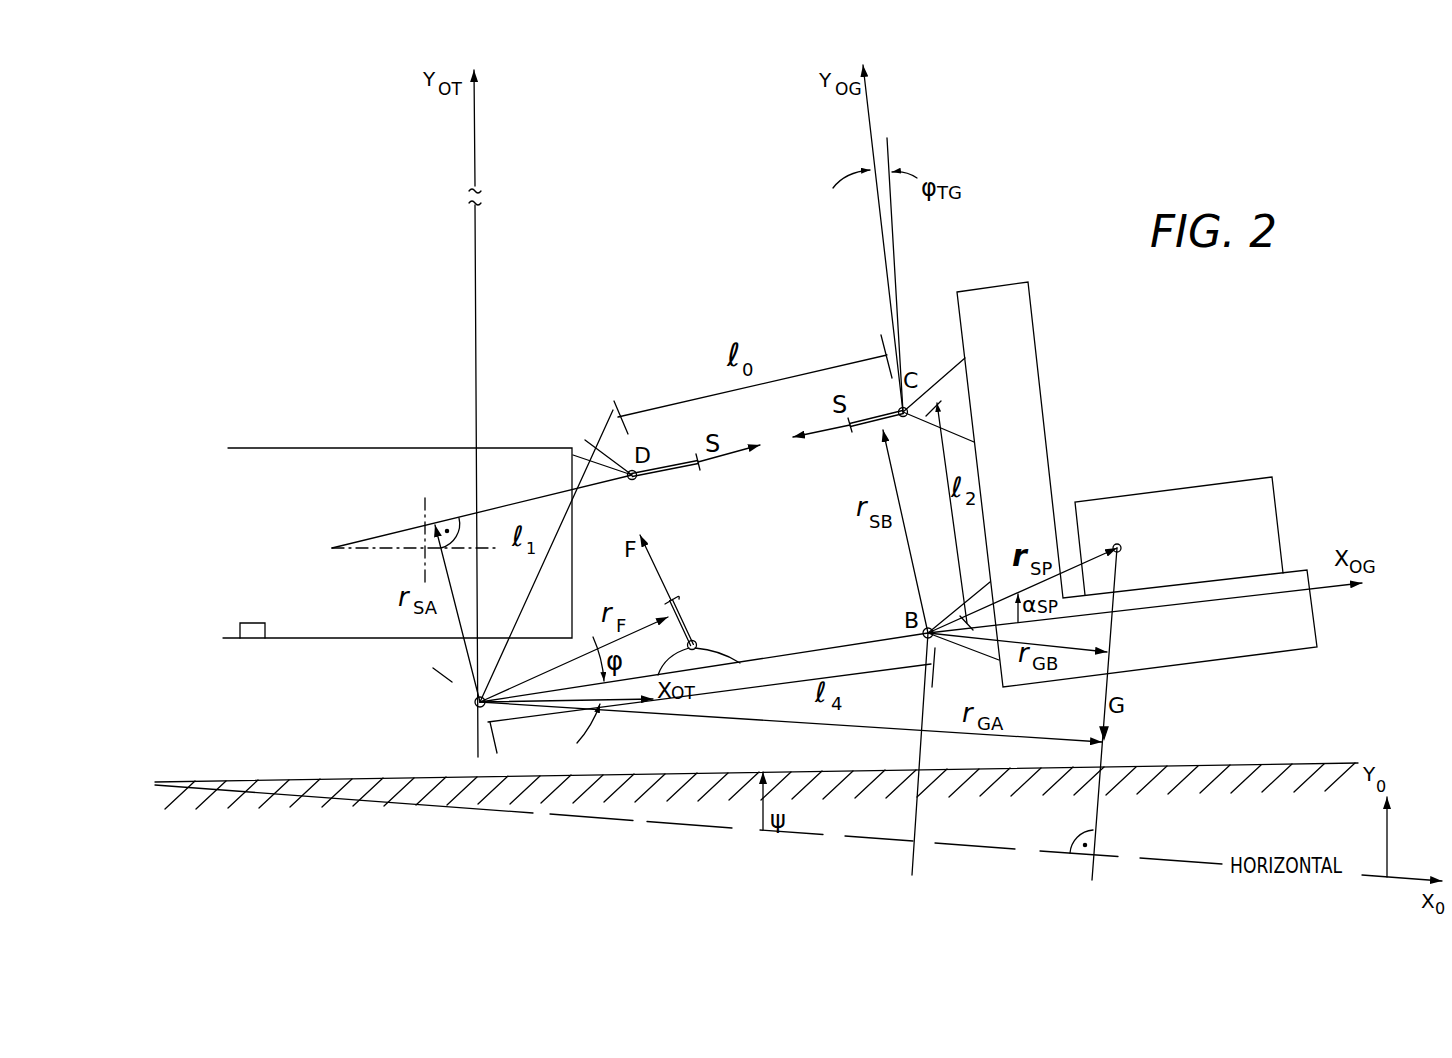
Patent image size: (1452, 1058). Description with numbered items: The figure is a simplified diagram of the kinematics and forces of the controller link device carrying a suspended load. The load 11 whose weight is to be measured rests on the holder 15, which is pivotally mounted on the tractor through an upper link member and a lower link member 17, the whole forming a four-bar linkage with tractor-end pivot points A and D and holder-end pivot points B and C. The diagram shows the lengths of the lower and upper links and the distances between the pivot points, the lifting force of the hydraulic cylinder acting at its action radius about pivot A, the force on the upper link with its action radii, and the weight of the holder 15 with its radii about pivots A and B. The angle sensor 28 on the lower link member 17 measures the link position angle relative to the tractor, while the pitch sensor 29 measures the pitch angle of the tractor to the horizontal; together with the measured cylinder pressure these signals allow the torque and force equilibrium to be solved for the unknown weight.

The load 11 is at (1266, 496).
The holder 15 is at (1023, 308).
The lower link member 17 is at (799, 653).
The angle sensor 28 is at (470, 712).
The pitch sensor 29 is at (258, 640).